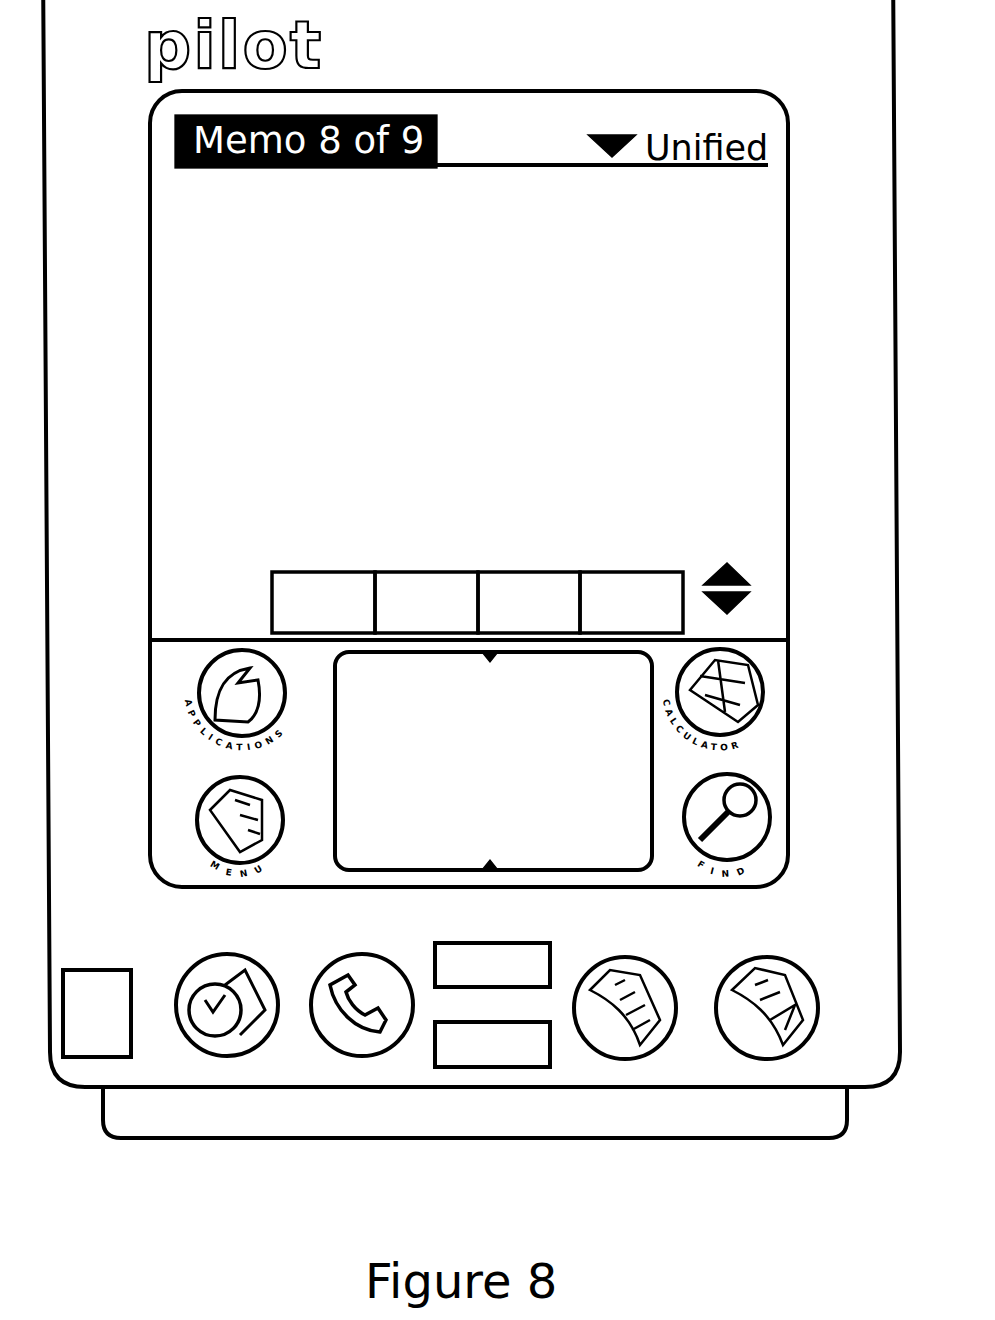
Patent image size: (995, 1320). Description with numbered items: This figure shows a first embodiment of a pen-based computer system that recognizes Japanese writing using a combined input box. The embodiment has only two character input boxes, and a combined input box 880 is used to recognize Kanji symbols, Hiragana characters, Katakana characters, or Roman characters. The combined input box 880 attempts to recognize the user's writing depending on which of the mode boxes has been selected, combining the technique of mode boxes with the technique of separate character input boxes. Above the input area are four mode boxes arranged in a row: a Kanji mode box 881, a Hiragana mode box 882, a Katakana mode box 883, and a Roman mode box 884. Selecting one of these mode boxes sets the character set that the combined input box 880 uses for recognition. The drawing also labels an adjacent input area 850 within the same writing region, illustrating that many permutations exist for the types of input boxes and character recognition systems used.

The Kanji mode box 881 is at (312, 572).
The Hiragana mode box 882 is at (422, 572).
The Katakana mode box 883 is at (515, 572).
The Roman mode box 884 is at (615, 572).
The combined input box 880 is at (436, 761).
The graffiti input area 850 is at (493, 761).